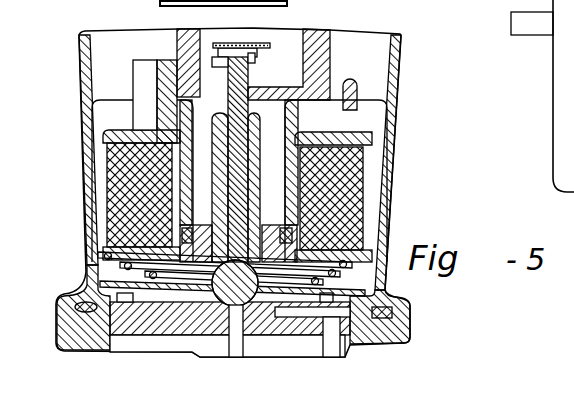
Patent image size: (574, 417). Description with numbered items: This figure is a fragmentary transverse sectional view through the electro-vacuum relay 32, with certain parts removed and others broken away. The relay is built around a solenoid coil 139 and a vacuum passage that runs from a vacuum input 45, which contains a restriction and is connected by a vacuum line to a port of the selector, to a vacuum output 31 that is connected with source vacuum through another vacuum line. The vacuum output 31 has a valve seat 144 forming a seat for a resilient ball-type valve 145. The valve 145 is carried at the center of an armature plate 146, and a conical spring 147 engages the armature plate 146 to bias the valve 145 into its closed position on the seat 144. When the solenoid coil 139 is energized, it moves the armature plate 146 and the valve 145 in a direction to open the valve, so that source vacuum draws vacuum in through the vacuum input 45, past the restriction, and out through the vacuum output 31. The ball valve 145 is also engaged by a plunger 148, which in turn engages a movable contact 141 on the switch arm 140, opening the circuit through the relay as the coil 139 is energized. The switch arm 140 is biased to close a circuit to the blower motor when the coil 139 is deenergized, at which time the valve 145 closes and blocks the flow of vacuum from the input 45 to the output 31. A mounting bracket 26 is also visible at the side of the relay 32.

The mounting bracket 26 is at (534, 30).
The vacuum output 31 is at (200, 340).
The electro-vacuum relay 32 is at (401, 111).
The vacuum input 45 is at (352, 350).
The solenoid coil 139 is at (363, 184).
The switch arm 140 is at (276, 33).
The movable contact 141 is at (259, 46).
The valve seat 144 is at (265, 288).
The ball valve 145 is at (224, 350).
The armature plate 146 is at (352, 284).
The conical spring 147 is at (124, 267).
The plunger 148 is at (283, 107).